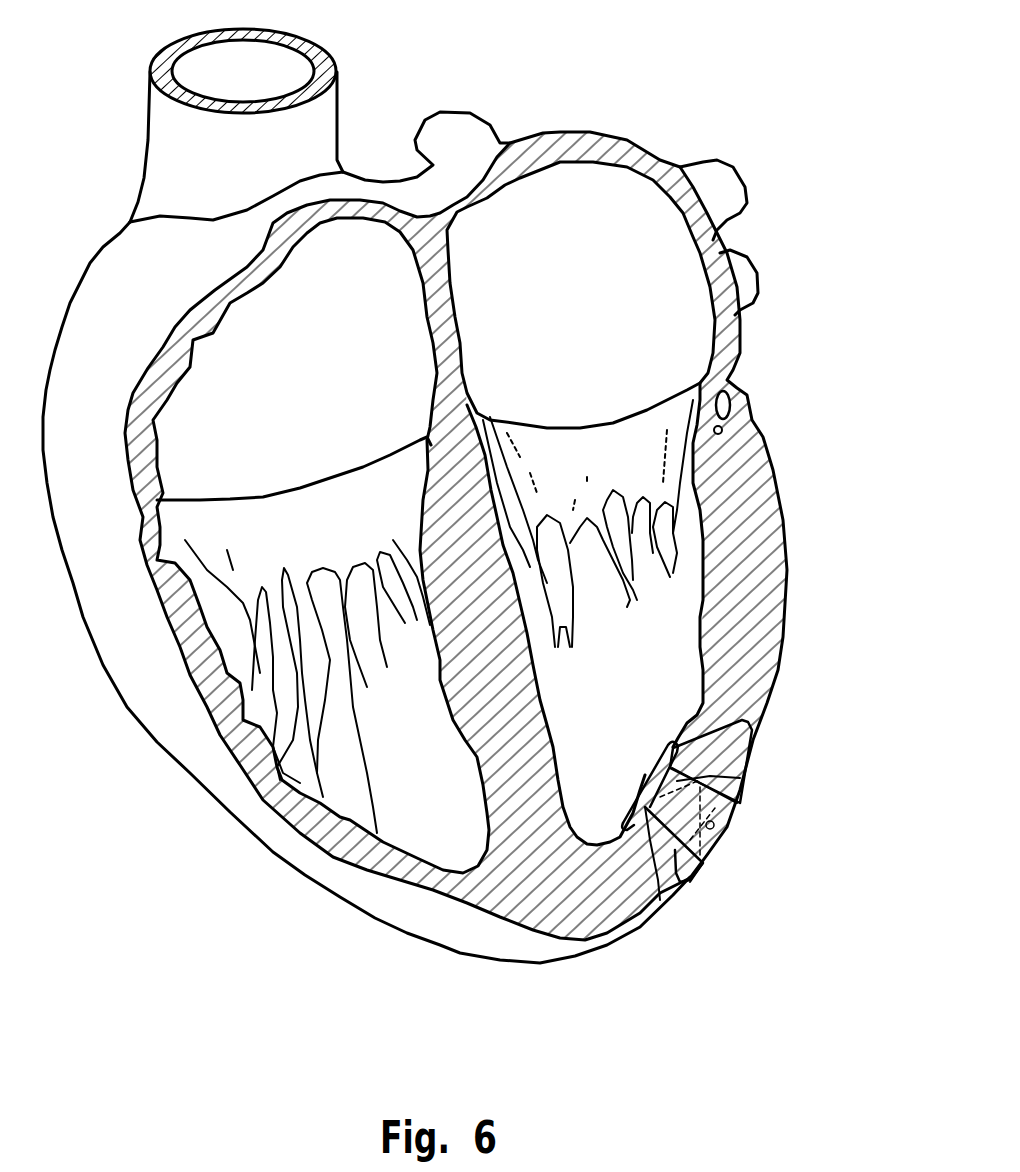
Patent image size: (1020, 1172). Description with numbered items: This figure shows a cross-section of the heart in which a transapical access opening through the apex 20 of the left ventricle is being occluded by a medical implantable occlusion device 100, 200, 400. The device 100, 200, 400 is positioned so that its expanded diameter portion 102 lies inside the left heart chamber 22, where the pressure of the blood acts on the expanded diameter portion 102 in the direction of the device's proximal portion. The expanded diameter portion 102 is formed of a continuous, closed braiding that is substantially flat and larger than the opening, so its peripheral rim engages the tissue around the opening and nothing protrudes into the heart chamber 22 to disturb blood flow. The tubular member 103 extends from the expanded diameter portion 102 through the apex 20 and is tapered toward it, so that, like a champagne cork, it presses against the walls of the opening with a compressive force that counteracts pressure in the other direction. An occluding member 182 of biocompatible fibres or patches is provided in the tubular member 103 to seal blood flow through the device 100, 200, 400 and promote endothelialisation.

The apex 20 is at (510, 586).
The heart chamber 22 is at (683, 647).
The medical occlusion device 100 is at (630, 748).
The medical occlusion device 200 is at (630, 765).
The medical occlusion device 400 is at (649, 727).
The expanded diameter portion 102 is at (757, 735).
The occluding member 182 is at (740, 778).
The tubular member 103 is at (658, 833).